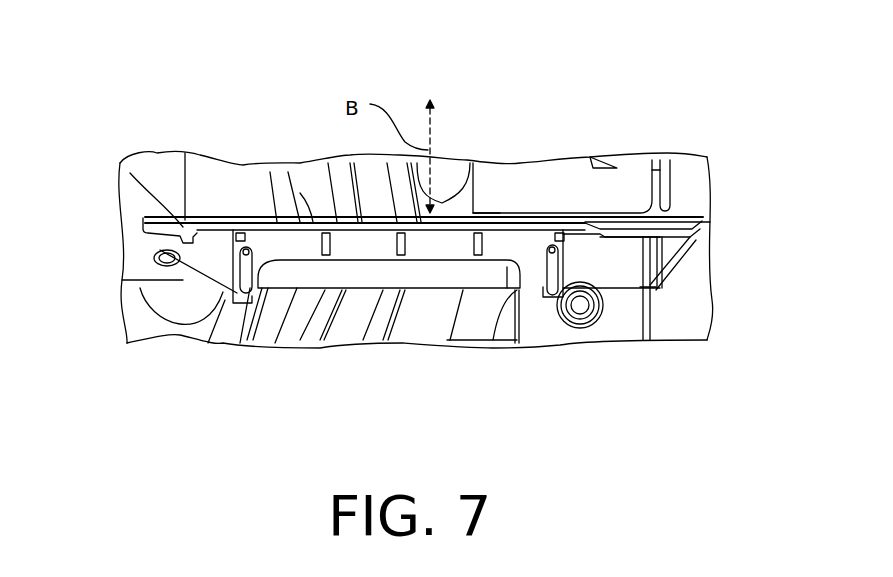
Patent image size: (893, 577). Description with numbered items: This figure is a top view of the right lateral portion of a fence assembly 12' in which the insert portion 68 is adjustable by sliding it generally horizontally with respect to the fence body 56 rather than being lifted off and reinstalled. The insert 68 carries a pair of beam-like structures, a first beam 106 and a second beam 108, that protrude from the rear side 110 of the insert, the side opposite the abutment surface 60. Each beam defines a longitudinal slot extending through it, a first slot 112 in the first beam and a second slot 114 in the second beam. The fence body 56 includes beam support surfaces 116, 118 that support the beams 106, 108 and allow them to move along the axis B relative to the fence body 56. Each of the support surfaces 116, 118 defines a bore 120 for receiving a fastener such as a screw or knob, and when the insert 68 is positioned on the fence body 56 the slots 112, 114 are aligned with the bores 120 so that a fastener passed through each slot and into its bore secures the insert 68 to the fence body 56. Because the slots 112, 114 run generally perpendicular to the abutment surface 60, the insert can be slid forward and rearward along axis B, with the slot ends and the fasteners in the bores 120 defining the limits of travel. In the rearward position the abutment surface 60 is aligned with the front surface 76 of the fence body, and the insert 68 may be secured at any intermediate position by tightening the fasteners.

The fence assembly 12' is at (119, 79).
The abutment surface 60 is at (298, 218).
The front surface 76 is at (185, 222).
The insert portion 68 is at (513, 212).
The bore 120 is at (243, 252).
The fence body 56 is at (620, 270).
The beam 106 is at (231, 302).
The longitudinal slot 114 is at (521, 293).
The rear side 110 is at (425, 235).
The beam 108 is at (597, 305).
The beam support surface 116 is at (183, 333).
The longitudinal slot 112 is at (272, 292).
The beam support surface 118 is at (493, 343).